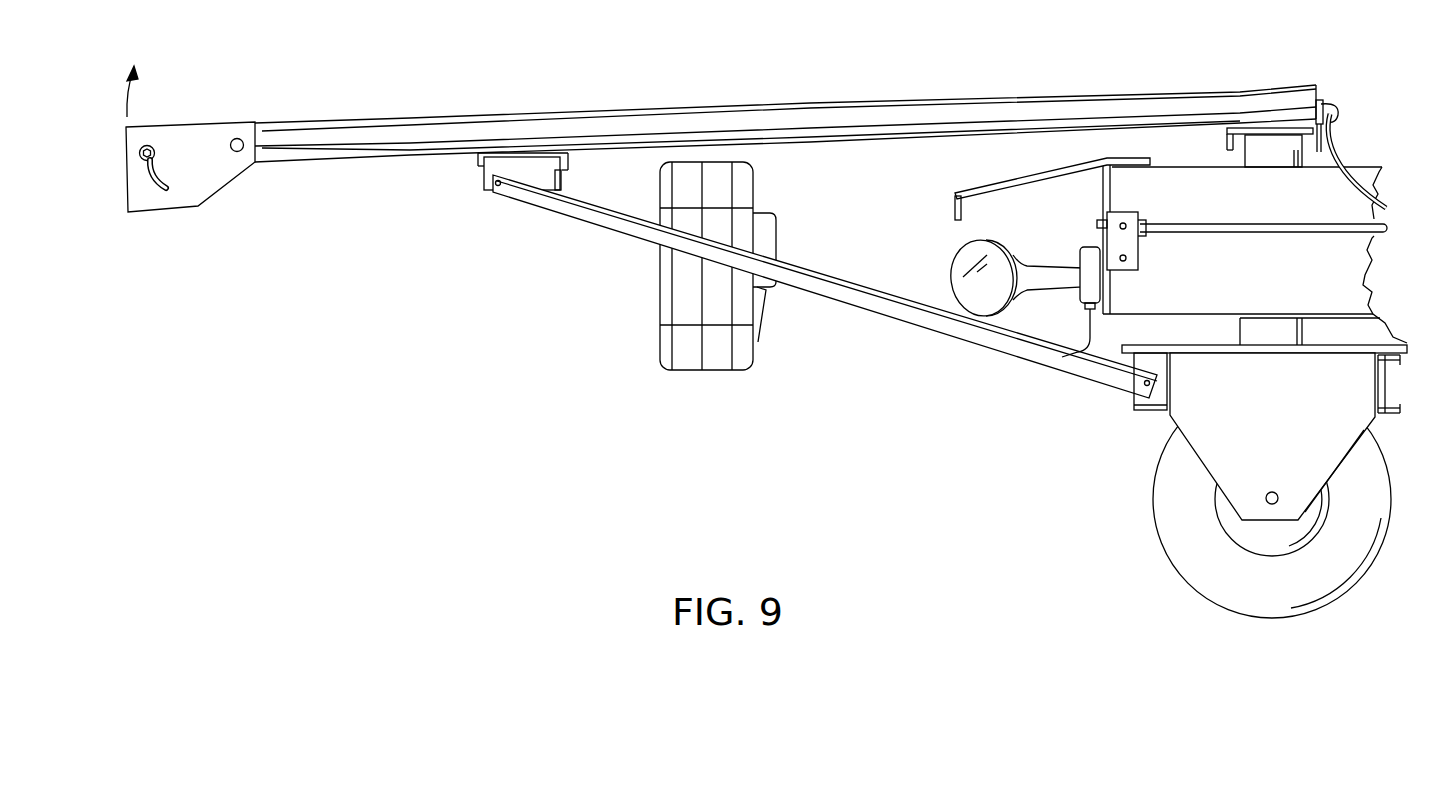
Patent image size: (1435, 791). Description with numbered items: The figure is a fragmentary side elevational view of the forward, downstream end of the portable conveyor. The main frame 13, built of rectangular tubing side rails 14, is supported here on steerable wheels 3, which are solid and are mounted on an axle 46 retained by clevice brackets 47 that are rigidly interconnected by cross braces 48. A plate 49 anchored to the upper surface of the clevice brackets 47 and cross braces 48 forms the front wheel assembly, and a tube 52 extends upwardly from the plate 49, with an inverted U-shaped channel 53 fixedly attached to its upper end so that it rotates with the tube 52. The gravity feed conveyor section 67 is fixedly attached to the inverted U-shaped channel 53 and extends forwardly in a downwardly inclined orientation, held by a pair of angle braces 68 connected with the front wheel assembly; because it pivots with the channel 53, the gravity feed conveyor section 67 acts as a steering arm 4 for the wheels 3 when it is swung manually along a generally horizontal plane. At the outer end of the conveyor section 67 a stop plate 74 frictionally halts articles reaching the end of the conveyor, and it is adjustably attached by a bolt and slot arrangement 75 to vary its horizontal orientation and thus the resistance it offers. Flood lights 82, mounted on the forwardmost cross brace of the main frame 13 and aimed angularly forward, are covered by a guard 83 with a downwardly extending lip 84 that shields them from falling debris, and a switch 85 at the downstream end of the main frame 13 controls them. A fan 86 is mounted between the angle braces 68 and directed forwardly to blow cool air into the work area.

The steerable wheels 3 is at (1163, 509).
The steering arm 4 is at (358, 118).
The main frame 13 is at (1165, 163).
The side rails 14 is at (1192, 300).
The axle 46 is at (1270, 490).
The clevice brackets 47 is at (1197, 427).
The cross braces 48 is at (1397, 394).
The plate 49 is at (1357, 348).
The tube 52 is at (1283, 332).
The inverted U-shaped channel 53 is at (1333, 121).
The gravity feed conveyor section 67 is at (640, 120).
The angle braces 68 is at (988, 337).
The stop plate 74 is at (150, 125).
The bolt and slot arrangement 75 is at (150, 148).
The flood lights 82 is at (978, 252).
The guard 83 is at (1000, 183).
The lip 84 is at (953, 205).
The switch 85 is at (1098, 220).
The fan 86 is at (663, 315).